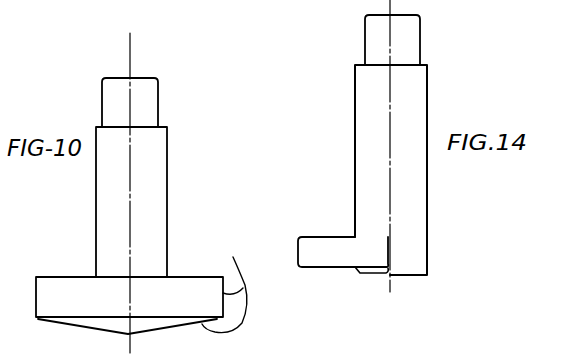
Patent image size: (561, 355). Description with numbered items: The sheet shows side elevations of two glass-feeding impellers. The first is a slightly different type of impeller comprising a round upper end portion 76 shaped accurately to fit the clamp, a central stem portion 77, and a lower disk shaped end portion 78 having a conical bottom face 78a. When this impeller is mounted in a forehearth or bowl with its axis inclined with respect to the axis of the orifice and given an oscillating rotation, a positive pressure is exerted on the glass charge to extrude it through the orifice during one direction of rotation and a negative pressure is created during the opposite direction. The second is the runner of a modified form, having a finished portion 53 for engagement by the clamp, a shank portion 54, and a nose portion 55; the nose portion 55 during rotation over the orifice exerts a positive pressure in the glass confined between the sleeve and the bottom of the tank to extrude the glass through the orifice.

In FIG. 10, the round upper end portion 76 is at (159, 102).
In FIG. 10, the central stem portion 77 is at (167, 193).
In FIG. 10, the lower disk shaped end portion 78 is at (205, 277).
In FIG. 10, the conical bottom face 78a is at (242, 332).
In FIG. 14, the finished portion 53 is at (365, 40).
In FIG. 14, the shank portion 54 is at (355, 132).
In FIG. 14, the nose portion 55 is at (328, 237).